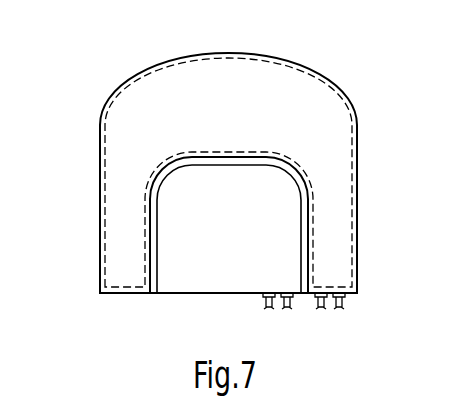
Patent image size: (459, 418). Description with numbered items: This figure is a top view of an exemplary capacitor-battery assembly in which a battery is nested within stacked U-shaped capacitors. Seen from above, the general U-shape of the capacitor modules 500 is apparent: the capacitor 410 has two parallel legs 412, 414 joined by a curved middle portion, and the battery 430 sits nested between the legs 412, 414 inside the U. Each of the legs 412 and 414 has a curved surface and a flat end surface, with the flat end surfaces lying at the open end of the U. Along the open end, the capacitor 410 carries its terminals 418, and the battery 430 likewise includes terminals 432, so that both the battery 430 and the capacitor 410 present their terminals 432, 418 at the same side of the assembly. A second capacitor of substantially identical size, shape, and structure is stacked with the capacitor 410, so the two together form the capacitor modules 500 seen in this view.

The capacitor 410 is at (235, 53).
The leg 412 is at (100, 252).
The leg 414 is at (357, 190).
The capacitor modules 500 is at (353, 152).
The battery 430 is at (174, 294).
The terminals 432 is at (283, 308).
The terminals 418 is at (318, 310).